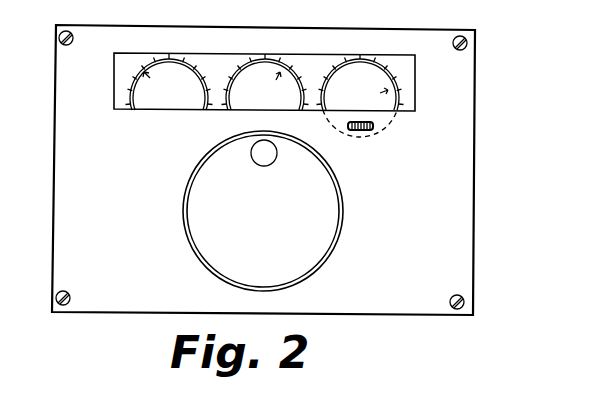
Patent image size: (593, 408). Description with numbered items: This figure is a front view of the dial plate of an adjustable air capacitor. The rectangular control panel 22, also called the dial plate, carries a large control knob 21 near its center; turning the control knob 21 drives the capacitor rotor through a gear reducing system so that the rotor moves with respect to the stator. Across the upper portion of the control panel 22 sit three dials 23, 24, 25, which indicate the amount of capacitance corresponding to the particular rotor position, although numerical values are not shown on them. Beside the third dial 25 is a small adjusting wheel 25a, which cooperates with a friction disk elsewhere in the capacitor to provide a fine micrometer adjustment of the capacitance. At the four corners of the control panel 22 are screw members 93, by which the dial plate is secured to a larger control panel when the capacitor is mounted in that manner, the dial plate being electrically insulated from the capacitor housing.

The control knob 21 is at (327, 185).
The control panel 22 is at (467, 183).
The dial 23 is at (157, 100).
The dial 24 is at (247, 100).
The dial 25 is at (342, 98).
The small adjusting wheel 25a is at (375, 130).
The screw members 93 is at (70, 31).